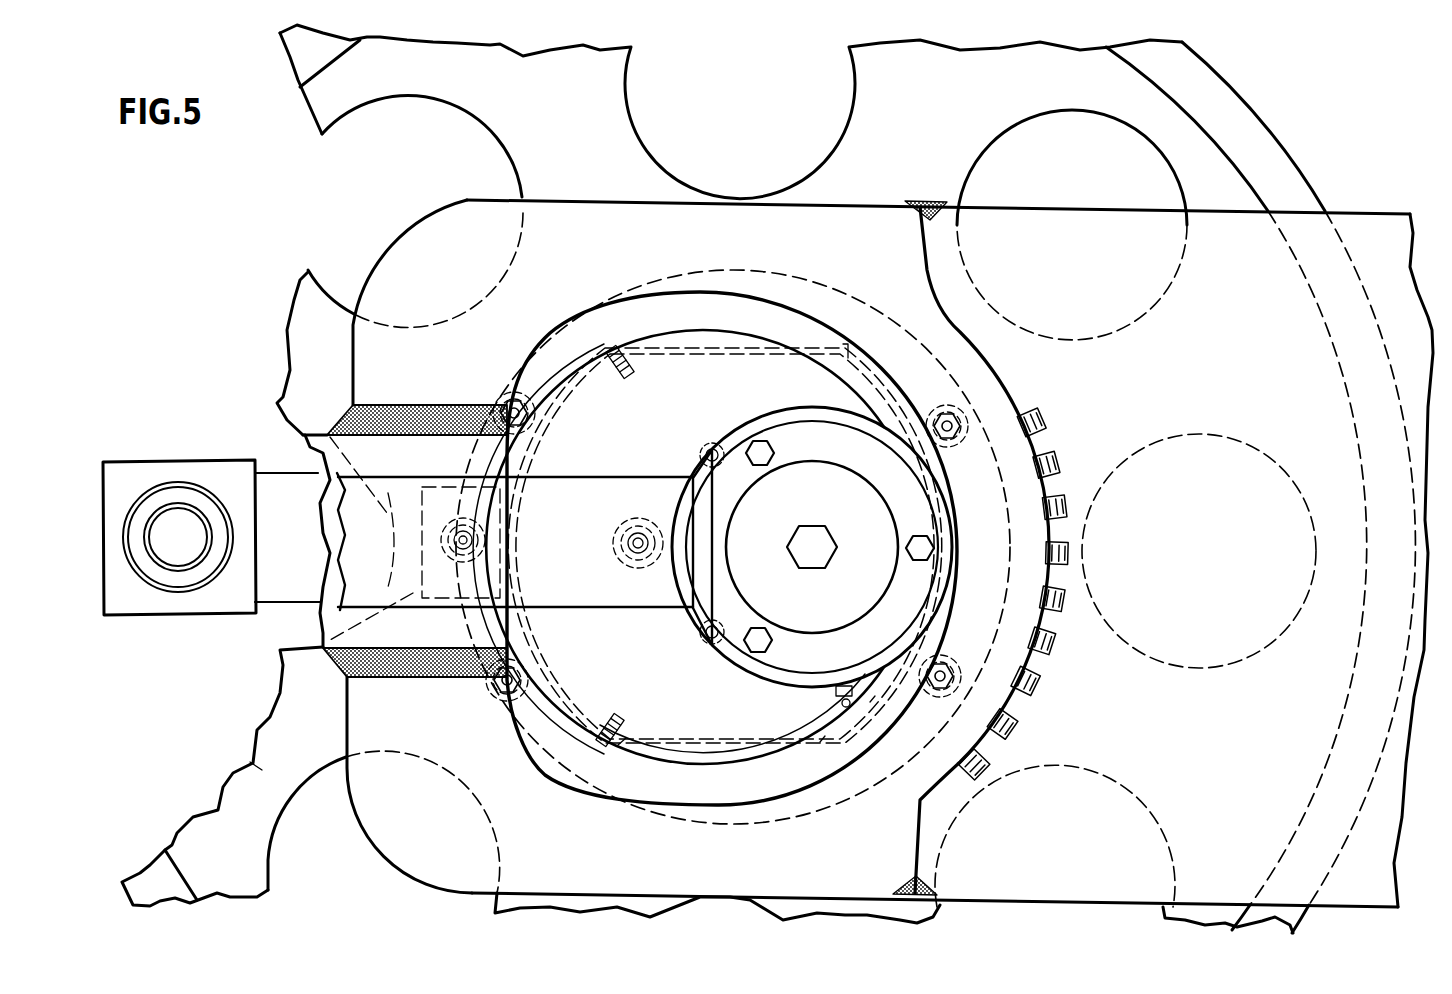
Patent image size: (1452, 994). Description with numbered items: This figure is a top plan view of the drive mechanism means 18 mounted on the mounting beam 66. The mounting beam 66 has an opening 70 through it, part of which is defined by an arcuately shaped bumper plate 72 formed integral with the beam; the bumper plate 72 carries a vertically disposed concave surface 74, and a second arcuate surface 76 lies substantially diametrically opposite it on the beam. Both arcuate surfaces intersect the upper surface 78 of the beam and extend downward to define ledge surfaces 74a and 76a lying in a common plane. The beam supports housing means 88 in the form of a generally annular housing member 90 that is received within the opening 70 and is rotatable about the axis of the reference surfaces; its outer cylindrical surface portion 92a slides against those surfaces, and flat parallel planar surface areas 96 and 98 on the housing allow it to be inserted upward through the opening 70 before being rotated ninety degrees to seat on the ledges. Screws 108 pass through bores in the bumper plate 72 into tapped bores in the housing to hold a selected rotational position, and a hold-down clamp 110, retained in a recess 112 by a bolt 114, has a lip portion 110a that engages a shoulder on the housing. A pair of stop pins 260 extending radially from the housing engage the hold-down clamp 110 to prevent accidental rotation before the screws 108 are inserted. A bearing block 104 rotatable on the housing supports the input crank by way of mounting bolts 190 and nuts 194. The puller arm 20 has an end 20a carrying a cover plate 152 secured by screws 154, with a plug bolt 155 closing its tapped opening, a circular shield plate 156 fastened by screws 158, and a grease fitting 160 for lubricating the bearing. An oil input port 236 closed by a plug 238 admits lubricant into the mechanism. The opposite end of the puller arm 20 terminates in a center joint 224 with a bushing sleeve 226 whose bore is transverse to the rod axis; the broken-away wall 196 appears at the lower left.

The drive mechanism means 18 is at (366, 245).
The puller arm 20 is at (240, 461).
The end of the puller arm 20a is at (807, 418).
The mounting beam 66 is at (1380, 212).
The opening 70 is at (673, 795).
The bumper plate 72 is at (990, 372).
The concave surface 74 is at (884, 390).
The ledge surface 74a is at (872, 703).
The second arcuate surface 76 is at (505, 642).
The ledge surface 76a is at (462, 648).
The upper surface 78 is at (358, 728).
The housing means 88 is at (812, 752).
The housing member 90 is at (829, 745).
The outer cylindrical surface portion 92a is at (598, 368).
The flat planar surface area 96 is at (620, 744).
The flat planar surface area 98 is at (843, 349).
The bearing block 104 is at (563, 756).
The screws 108 is at (1068, 497).
The hold-down clamp 110 is at (440, 474).
The lip portion 110a is at (512, 530).
The recess 112 is at (392, 605).
The bolt 114 is at (487, 483).
The cover plate 152 is at (805, 660).
The screws 154 is at (760, 448).
The plug bolt 155 is at (822, 553).
The shield plate 156 is at (703, 756).
The screws 158 is at (707, 446).
The grease fitting 160 is at (838, 706).
The mounting bolts 190 is at (534, 400).
The nuts 194 is at (510, 398).
The housing wall 196 is at (258, 773).
The center joint 224 is at (230, 600).
The bushing sleeve 226 is at (176, 575).
The oil input port 236 is at (646, 560).
The plug 238 is at (630, 556).
The stop pins 260 is at (622, 350).